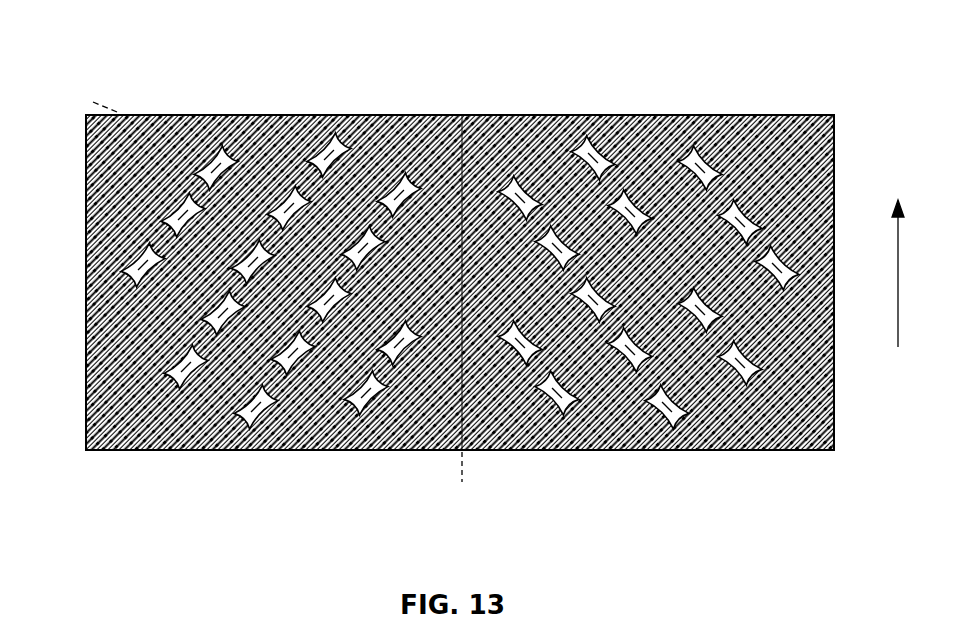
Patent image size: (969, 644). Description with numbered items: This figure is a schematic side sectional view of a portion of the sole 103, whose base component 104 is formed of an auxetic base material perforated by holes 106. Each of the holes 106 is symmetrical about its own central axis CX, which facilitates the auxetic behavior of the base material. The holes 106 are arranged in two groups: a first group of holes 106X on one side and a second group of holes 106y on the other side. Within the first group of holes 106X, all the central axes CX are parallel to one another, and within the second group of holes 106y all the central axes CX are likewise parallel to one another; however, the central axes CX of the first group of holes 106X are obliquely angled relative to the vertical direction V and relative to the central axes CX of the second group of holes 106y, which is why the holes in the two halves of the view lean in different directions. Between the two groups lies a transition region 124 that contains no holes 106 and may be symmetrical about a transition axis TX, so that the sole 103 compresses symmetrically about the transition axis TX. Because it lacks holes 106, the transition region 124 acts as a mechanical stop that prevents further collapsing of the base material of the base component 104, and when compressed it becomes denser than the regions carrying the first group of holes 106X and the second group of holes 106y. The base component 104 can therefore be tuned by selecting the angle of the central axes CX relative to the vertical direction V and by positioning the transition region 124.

The sole 103 is at (133, 113).
The base component 104 is at (120, 450).
The holes 106 is at (228, 156).
The first group of holes 106X is at (245, 425).
The second group of holes 106y is at (672, 426).
The transition region 124 is at (470, 428).
The central axis CX is at (188, 125).
The transition axis TX is at (462, 113).
The vertical direction V is at (897, 277).